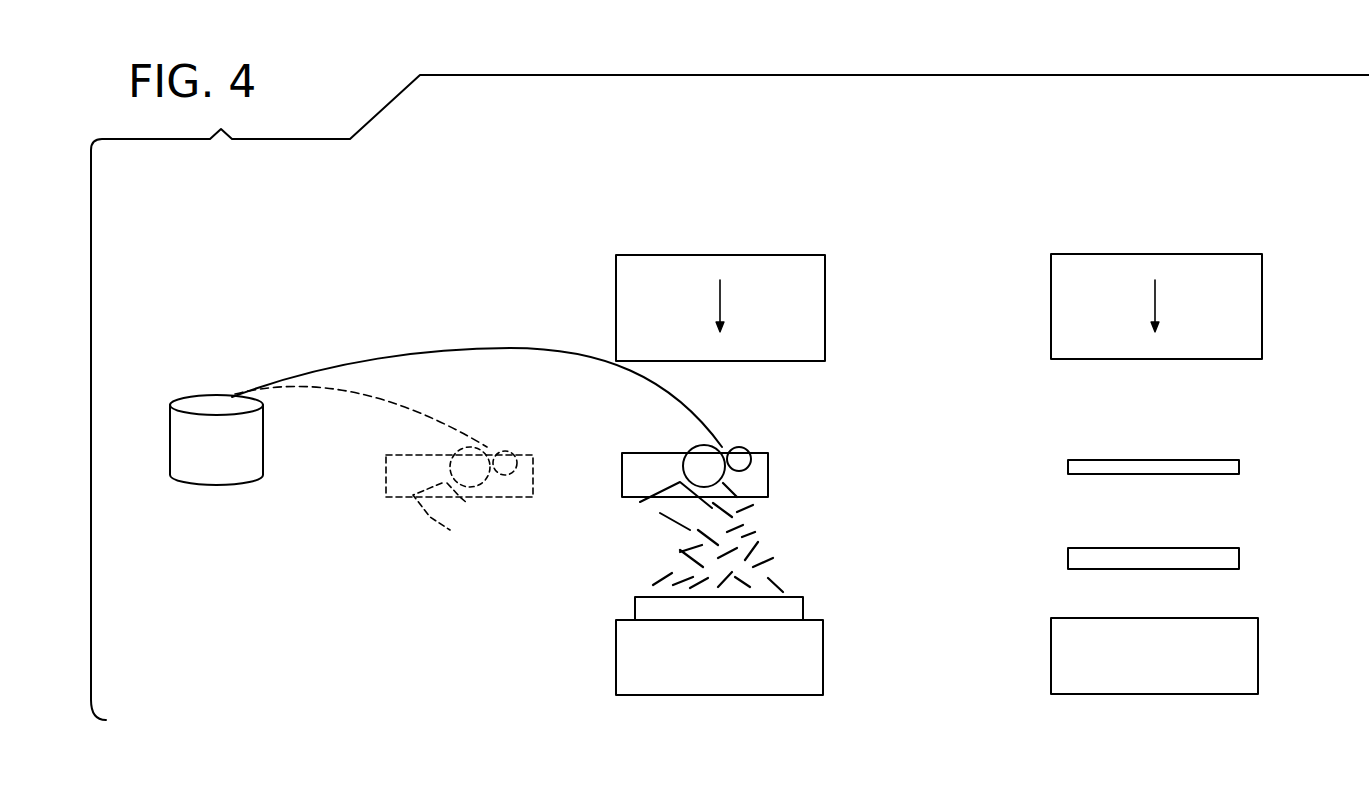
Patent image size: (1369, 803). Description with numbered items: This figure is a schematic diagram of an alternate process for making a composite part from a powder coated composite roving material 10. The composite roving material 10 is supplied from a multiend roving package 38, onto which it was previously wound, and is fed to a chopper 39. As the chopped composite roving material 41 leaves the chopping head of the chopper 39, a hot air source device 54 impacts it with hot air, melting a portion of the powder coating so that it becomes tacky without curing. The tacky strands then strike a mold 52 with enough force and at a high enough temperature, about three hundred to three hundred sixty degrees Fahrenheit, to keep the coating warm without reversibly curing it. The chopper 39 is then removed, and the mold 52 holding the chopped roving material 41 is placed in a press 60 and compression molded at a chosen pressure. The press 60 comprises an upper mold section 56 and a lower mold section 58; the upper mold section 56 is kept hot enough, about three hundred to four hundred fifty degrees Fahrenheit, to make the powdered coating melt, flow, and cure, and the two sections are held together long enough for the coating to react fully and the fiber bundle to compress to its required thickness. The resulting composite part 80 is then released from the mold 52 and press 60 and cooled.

The composite roving material 10 is at (427, 325).
The multiend roving package 38 is at (208, 499).
The chopper 39 is at (500, 432).
The chopped composite roving material 41 is at (757, 533).
The mold 52 is at (797, 608).
The hot air source device 54 is at (430, 517).
The upper mold section 56 is at (622, 283).
The lower mold section 58 is at (812, 656).
The press 60 is at (1005, 252).
The composite part 80 is at (1240, 466).